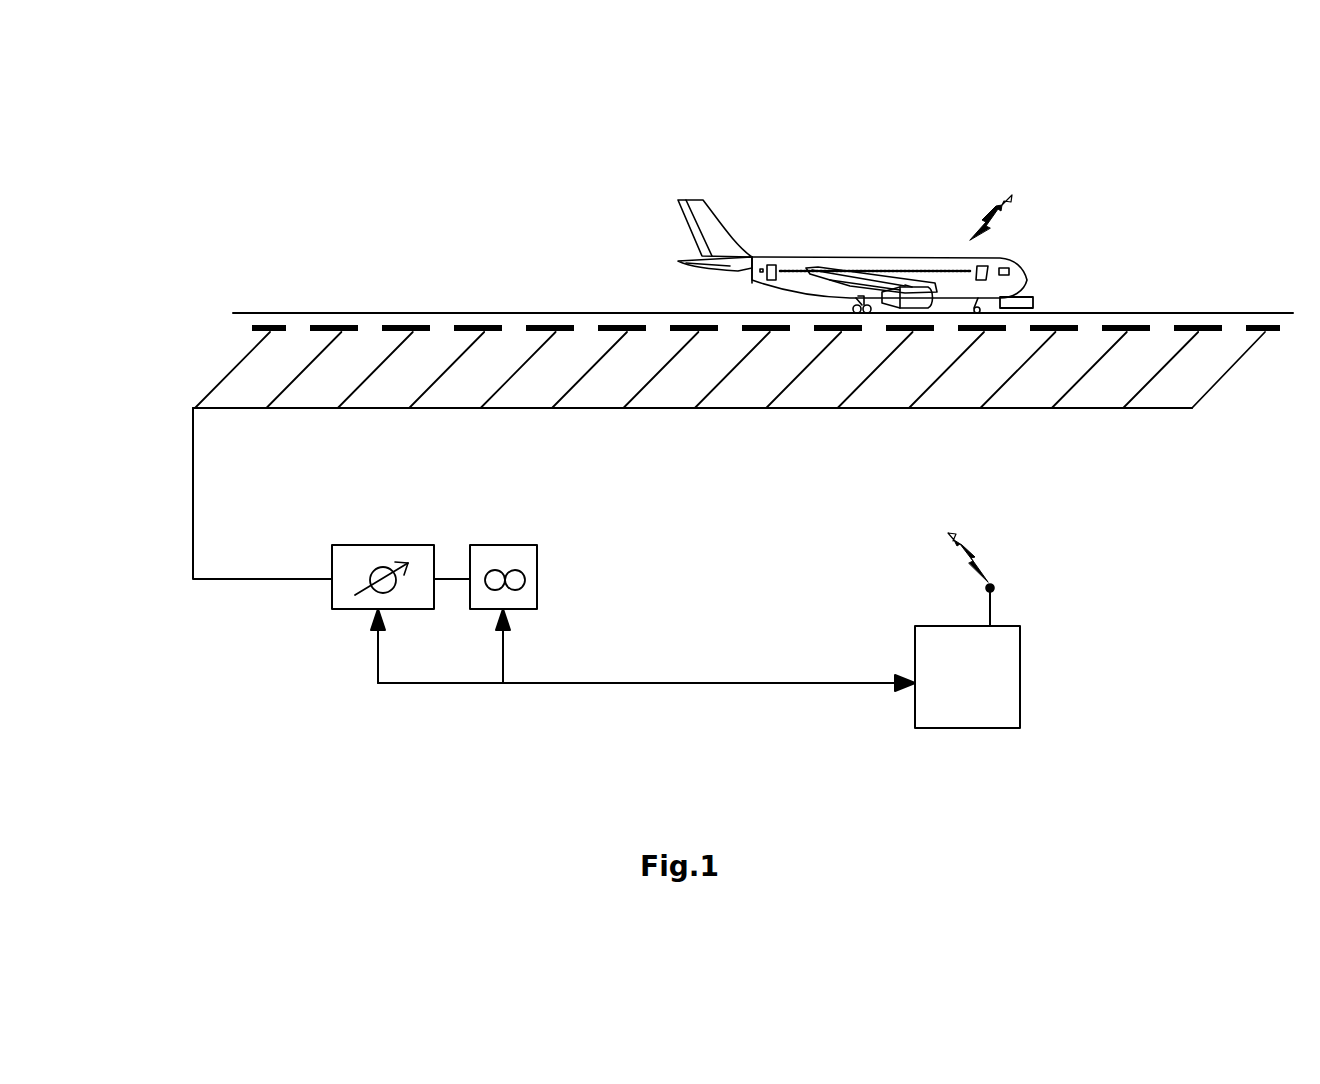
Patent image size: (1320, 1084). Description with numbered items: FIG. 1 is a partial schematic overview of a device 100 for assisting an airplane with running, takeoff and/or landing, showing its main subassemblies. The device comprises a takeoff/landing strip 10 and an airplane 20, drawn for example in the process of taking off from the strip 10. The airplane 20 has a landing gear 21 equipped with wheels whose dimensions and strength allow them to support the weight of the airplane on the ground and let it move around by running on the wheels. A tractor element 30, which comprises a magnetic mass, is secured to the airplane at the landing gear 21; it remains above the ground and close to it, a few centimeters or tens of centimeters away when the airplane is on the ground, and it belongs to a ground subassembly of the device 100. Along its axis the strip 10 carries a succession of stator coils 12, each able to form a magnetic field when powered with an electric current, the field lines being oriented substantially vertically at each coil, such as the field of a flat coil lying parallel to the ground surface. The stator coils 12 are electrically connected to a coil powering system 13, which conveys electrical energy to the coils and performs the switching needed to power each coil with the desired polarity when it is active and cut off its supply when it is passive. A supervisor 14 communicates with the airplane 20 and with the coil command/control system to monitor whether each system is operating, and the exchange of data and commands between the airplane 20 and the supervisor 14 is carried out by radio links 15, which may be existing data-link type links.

The device 100 is at (233, 178).
The takeoff/landing strip 10 is at (520, 313).
The stator coils 12 is at (337, 331).
The airplane 20 is at (792, 247).
The landing gear 21 is at (877, 297).
The tractor element 30 is at (1033, 297).
The radio links 15 is at (998, 206).
The coil powering system 13 is at (347, 665).
The supervisor 14 is at (989, 710).